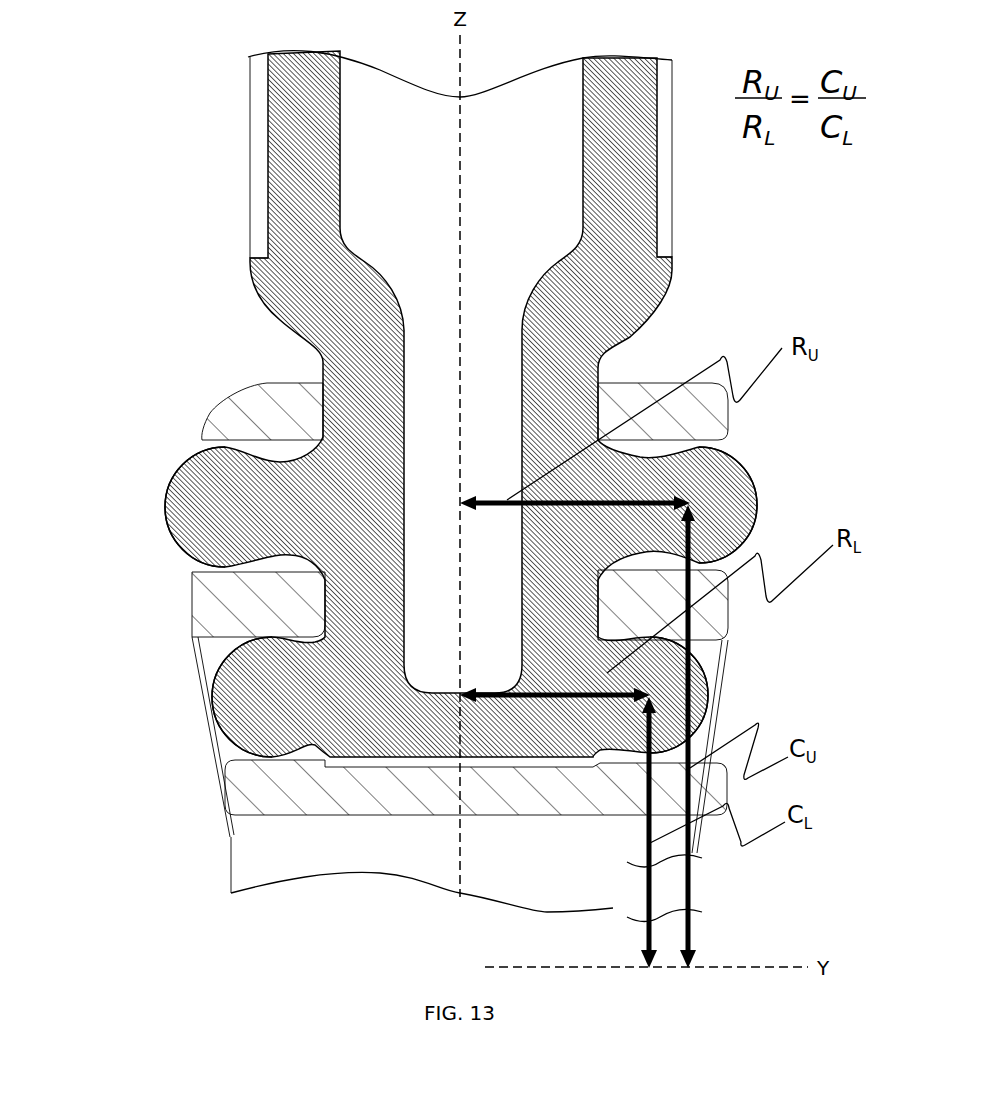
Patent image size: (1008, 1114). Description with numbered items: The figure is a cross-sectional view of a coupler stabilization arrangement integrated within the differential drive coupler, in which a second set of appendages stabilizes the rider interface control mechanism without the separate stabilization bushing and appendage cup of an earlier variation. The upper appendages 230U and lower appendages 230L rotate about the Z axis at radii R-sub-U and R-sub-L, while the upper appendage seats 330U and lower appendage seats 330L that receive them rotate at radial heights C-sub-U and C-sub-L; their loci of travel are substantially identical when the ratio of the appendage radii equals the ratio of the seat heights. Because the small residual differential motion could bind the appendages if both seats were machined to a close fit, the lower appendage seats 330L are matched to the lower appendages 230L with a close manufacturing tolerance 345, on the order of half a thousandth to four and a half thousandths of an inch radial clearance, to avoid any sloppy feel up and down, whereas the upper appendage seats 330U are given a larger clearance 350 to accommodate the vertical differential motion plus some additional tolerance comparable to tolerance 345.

The clearance 350 is at (196, 441).
The upper appendages 230U is at (163, 512).
The manufacturing tolerance 345 is at (240, 638).
The lower appendages 230L is at (212, 700).
The upper appendage seats 330U is at (703, 440).
The lower appendage seats 330L is at (703, 640).